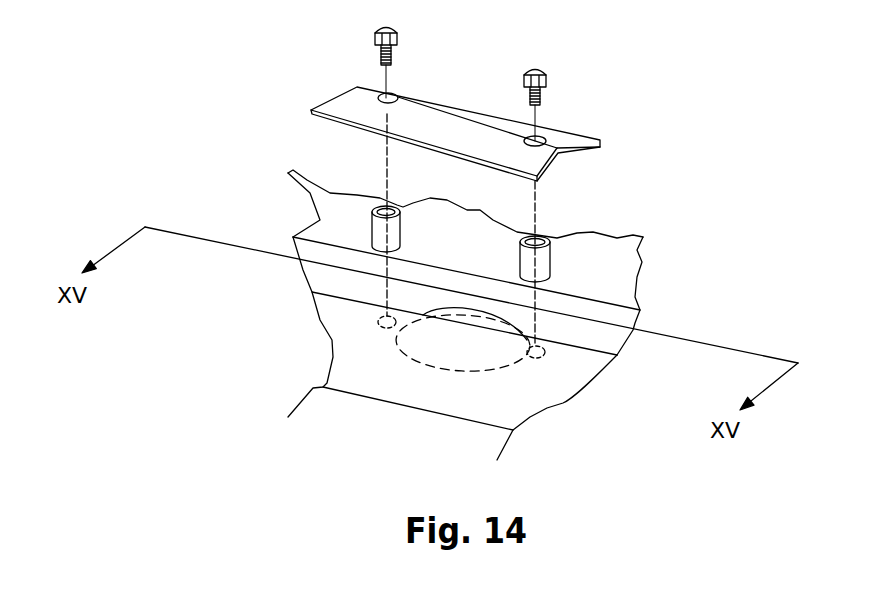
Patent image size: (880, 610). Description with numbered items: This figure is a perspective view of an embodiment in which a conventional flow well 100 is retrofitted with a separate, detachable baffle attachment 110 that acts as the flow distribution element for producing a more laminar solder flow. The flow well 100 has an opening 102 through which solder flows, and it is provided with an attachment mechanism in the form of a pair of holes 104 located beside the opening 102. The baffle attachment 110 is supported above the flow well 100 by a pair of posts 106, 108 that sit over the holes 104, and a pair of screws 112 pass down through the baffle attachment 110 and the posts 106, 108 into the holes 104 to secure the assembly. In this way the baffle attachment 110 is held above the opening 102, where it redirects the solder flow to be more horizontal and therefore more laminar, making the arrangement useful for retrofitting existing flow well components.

The flow well 100 is at (593, 300).
The opening 102 is at (463, 318).
The holes 104 is at (541, 358).
The post 106 is at (546, 258).
The post 108 is at (393, 232).
The baffle attachment 110 is at (424, 105).
The screws 112 is at (547, 84).